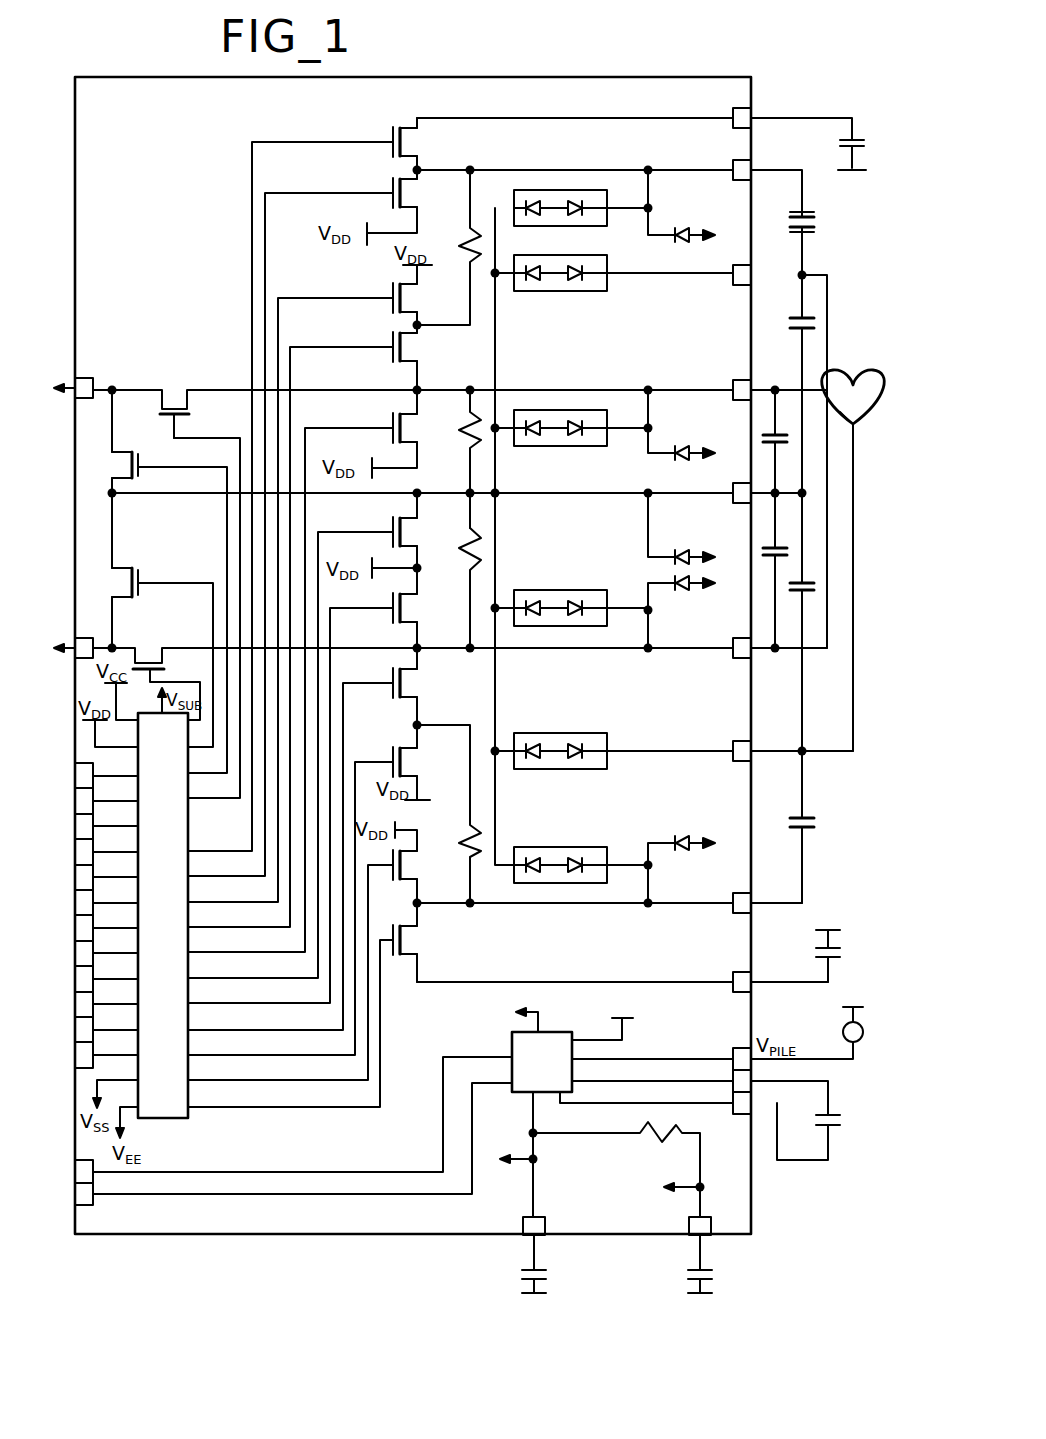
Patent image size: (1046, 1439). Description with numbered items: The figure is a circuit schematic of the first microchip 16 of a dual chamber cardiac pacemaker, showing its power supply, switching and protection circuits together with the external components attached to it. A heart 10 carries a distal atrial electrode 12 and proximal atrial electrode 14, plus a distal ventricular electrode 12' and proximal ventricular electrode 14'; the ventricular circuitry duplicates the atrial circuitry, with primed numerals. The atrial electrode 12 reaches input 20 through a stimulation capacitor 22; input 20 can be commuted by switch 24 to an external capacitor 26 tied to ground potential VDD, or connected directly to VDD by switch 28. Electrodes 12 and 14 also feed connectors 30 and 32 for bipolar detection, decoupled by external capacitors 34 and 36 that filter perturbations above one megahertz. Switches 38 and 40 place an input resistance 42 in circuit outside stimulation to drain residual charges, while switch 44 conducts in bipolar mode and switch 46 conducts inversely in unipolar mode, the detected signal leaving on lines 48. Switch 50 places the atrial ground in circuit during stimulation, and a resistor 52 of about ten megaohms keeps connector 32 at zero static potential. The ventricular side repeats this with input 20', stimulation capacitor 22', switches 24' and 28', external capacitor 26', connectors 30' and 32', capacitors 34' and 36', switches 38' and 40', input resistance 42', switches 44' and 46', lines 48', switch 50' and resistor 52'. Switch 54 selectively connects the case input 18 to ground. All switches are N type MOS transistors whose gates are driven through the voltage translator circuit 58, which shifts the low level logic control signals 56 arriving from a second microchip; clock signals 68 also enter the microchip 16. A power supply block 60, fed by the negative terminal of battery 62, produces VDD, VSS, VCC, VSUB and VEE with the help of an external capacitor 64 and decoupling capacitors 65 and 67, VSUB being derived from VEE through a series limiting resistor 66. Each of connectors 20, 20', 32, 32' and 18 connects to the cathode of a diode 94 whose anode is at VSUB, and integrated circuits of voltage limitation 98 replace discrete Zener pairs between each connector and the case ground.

The heart 10 is at (866, 370).
The distal atrial electrode 12 is at (833, 461).
The distal ventricular electrode 12' is at (873, 587).
The proximal atrial electrode 14 is at (819, 419).
The proximal ventricular electrode 14' is at (849, 440).
The first microchip 16 is at (652, 77).
The electrode input port 18 is at (744, 505).
The input 20 is at (767, 155).
The input 20' is at (713, 918).
The stimulation capacitor 22 is at (818, 213).
The stimulation capacitor 22' is at (790, 846).
The switch 24 is at (426, 142).
The switch 24' is at (429, 940).
The external capacitor 26 is at (817, 138).
The external capacitor 26' is at (806, 946).
The switch 28 is at (426, 193).
The switch 28' is at (429, 865).
The connector 30 is at (720, 298).
The connector 30' is at (720, 733).
The connector 32 is at (724, 371).
The connector 32' is at (719, 664).
The external capacitor 34 is at (792, 339).
The external capacitor 34' is at (812, 609).
The external capacitor 36 is at (785, 462).
The external capacitor 36' is at (786, 534).
The switch 38 is at (426, 298).
The switch 38' is at (429, 762).
The switch 40 is at (426, 347).
The switch 40' is at (429, 683).
The input resistance 42 is at (449, 247).
The input resistance 42' is at (449, 814).
The switch 44 is at (171, 390).
The switch 44' is at (166, 666).
The switch 46 is at (117, 466).
The switch 46' is at (117, 582).
The lines 48 is at (69, 357).
The lines 48' is at (67, 622).
The switch 50 is at (426, 428).
The switch 50' is at (428, 608).
The resistor 52 is at (459, 459).
The resistor 52' is at (454, 588).
The switch 54 is at (418, 534).
The logic control signals 56 is at (70, 763).
The voltage translator circuit 58 is at (178, 926).
The power supply block 60 is at (556, 1076).
The battery 62 is at (843, 1035).
The capacitor 64 is at (840, 1130).
The decoupling capacitor 65 is at (520, 1274).
The series limiting resistor 66 is at (654, 1140).
The decoupling capacitor 67 is at (712, 1272).
The clock signals 68 is at (70, 1160).
The diode 94 is at (680, 228).
The circuit of voltage limitation 98 is at (562, 226).